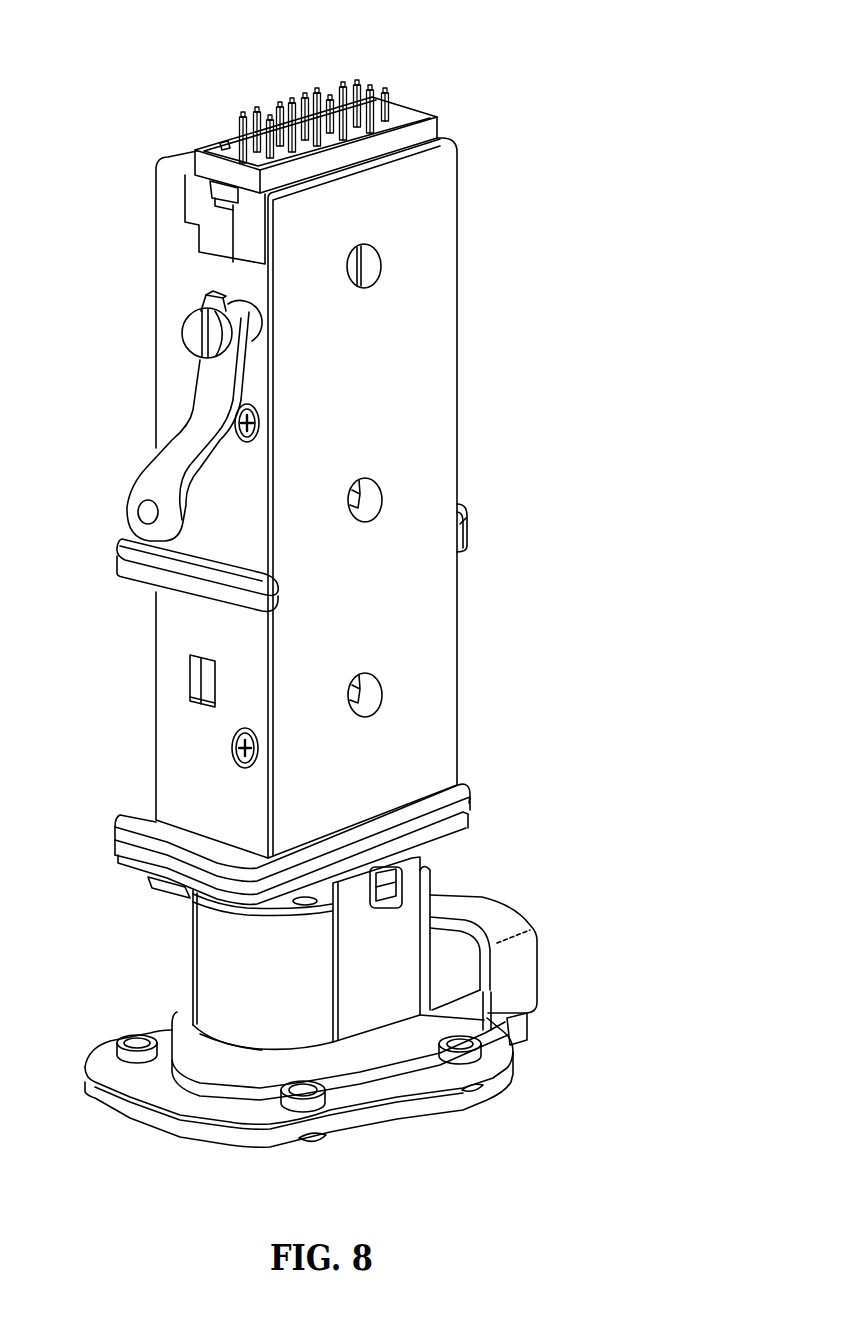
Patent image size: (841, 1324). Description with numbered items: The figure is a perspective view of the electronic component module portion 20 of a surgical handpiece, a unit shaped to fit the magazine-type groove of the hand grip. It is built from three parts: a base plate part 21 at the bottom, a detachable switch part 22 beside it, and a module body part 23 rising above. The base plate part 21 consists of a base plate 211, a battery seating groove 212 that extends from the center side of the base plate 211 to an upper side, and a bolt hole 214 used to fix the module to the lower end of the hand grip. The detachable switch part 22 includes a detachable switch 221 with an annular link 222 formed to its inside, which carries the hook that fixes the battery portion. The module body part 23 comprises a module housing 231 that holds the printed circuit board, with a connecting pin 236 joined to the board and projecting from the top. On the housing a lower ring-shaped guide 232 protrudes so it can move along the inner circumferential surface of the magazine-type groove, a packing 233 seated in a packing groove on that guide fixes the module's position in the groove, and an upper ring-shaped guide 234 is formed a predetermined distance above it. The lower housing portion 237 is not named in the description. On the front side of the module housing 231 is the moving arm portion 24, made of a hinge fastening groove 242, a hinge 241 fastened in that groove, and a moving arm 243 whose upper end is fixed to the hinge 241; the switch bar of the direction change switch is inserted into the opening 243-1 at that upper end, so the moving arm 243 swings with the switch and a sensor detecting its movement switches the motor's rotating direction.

The electronic component module portion 20 is at (474, 318).
The base plate part 21 is at (118, 1134).
The base plate 211 is at (125, 1083).
The battery seating groove 212 is at (432, 870).
The bolt hole 214 is at (317, 1142).
The detachable switch part 22 is at (549, 970).
The detachable switch 221 is at (527, 925).
The annular link 222 is at (180, 1020).
The module body part 23 is at (470, 661).
The module housing 231 is at (440, 723).
The lower ring-shaped guide 232 is at (467, 793).
The packing 233 is at (468, 822).
The upper ring-shaped guide 234 is at (467, 522).
The connecting pin 236 is at (355, 85).
The cylindrical housing 237 is at (387, 1000).
The moving arm portion 24 is at (111, 517).
The hinge 241 is at (182, 331).
The hinge fastening groove 242 is at (200, 358).
The moving arm 243 is at (163, 463).
The opening 243-1 is at (208, 298).